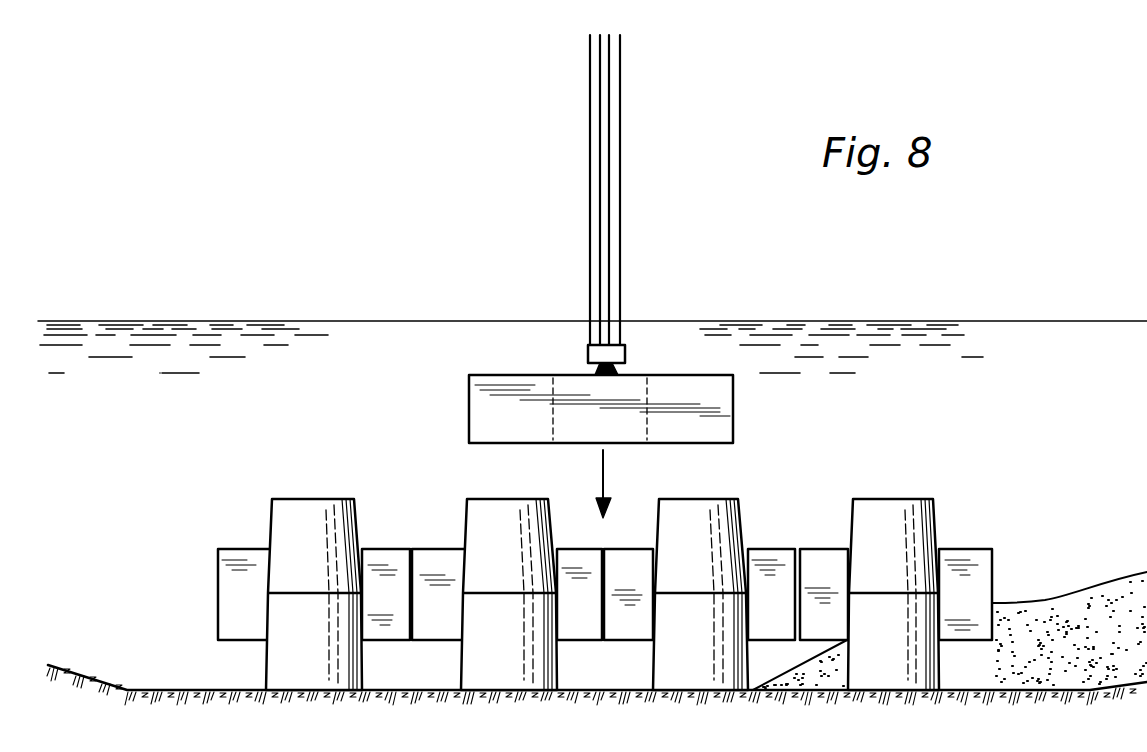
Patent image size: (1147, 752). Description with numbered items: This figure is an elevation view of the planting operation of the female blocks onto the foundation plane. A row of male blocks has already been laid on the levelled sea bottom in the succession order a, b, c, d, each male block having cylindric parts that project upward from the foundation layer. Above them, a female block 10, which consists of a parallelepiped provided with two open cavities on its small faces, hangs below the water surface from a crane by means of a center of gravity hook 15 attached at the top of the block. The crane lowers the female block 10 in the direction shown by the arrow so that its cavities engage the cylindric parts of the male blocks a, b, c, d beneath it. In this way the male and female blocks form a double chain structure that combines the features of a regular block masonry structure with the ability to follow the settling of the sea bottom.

The female block 10 is at (469, 410).
The hook connection 15 is at (620, 372).
The male block in the first row, first in placing order a is at (974, 612).
The male block in the first row, second in placing order b is at (783, 612).
The male block in the first row, third in placing order c is at (586, 612).
The male block in the first row, fourth in placing order d is at (392, 612).